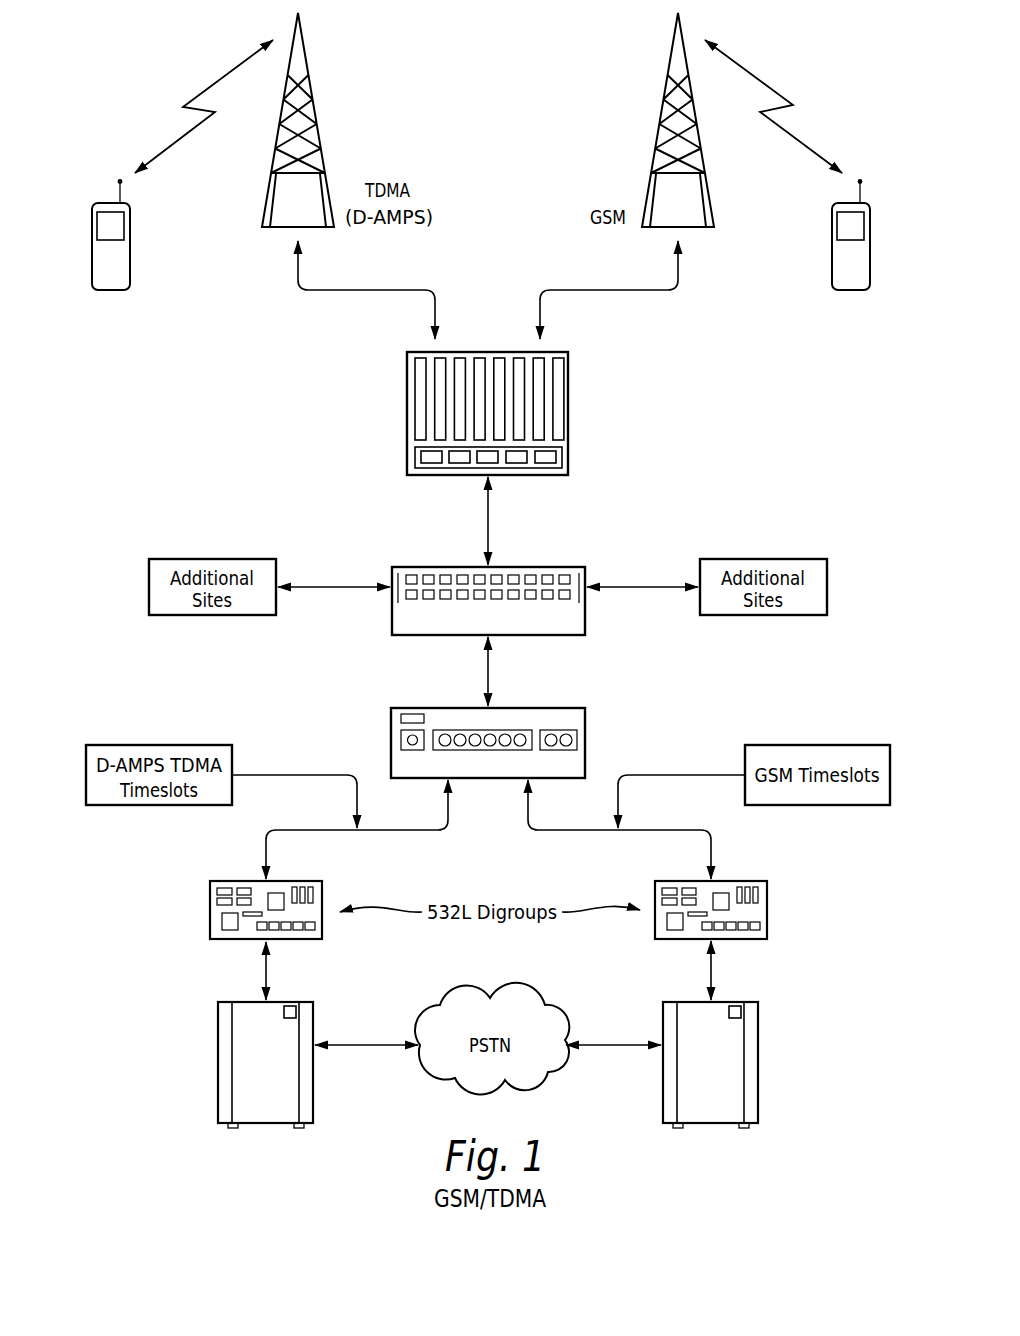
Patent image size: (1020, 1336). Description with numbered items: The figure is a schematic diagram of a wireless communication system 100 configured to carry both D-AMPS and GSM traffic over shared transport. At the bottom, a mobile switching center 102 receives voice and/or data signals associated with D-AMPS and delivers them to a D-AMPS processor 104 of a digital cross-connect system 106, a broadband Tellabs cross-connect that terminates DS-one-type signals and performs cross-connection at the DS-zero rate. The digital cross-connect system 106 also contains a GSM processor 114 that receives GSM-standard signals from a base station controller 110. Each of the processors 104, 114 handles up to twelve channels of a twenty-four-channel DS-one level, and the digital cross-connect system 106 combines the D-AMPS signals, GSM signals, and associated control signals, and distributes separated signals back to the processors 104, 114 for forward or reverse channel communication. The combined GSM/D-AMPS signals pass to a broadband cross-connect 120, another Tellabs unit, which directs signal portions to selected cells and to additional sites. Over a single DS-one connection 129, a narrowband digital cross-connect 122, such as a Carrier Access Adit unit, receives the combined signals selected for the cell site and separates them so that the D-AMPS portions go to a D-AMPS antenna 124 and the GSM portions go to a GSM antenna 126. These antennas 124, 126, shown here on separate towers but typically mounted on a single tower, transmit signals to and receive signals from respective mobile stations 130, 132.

The communication system 100 is at (113, 1090).
The mobile switching center 102 is at (218, 1017).
The D-AMPS processor 104 is at (210, 895).
The digital cross-connect system 106 is at (391, 722).
The base station controller 110 is at (758, 1020).
The GSM processor 114 is at (767, 904).
The broadband cross-connect 120 is at (392, 622).
The narrowband digital cross-connect 122 is at (568, 400).
The D-AMPS antenna 124 is at (305, 47).
The GSM antenna 126 is at (671, 45).
The single DS1 connection 129 is at (488, 508).
The mobile station 130 is at (130, 272).
The mobile station 132 is at (832, 268).